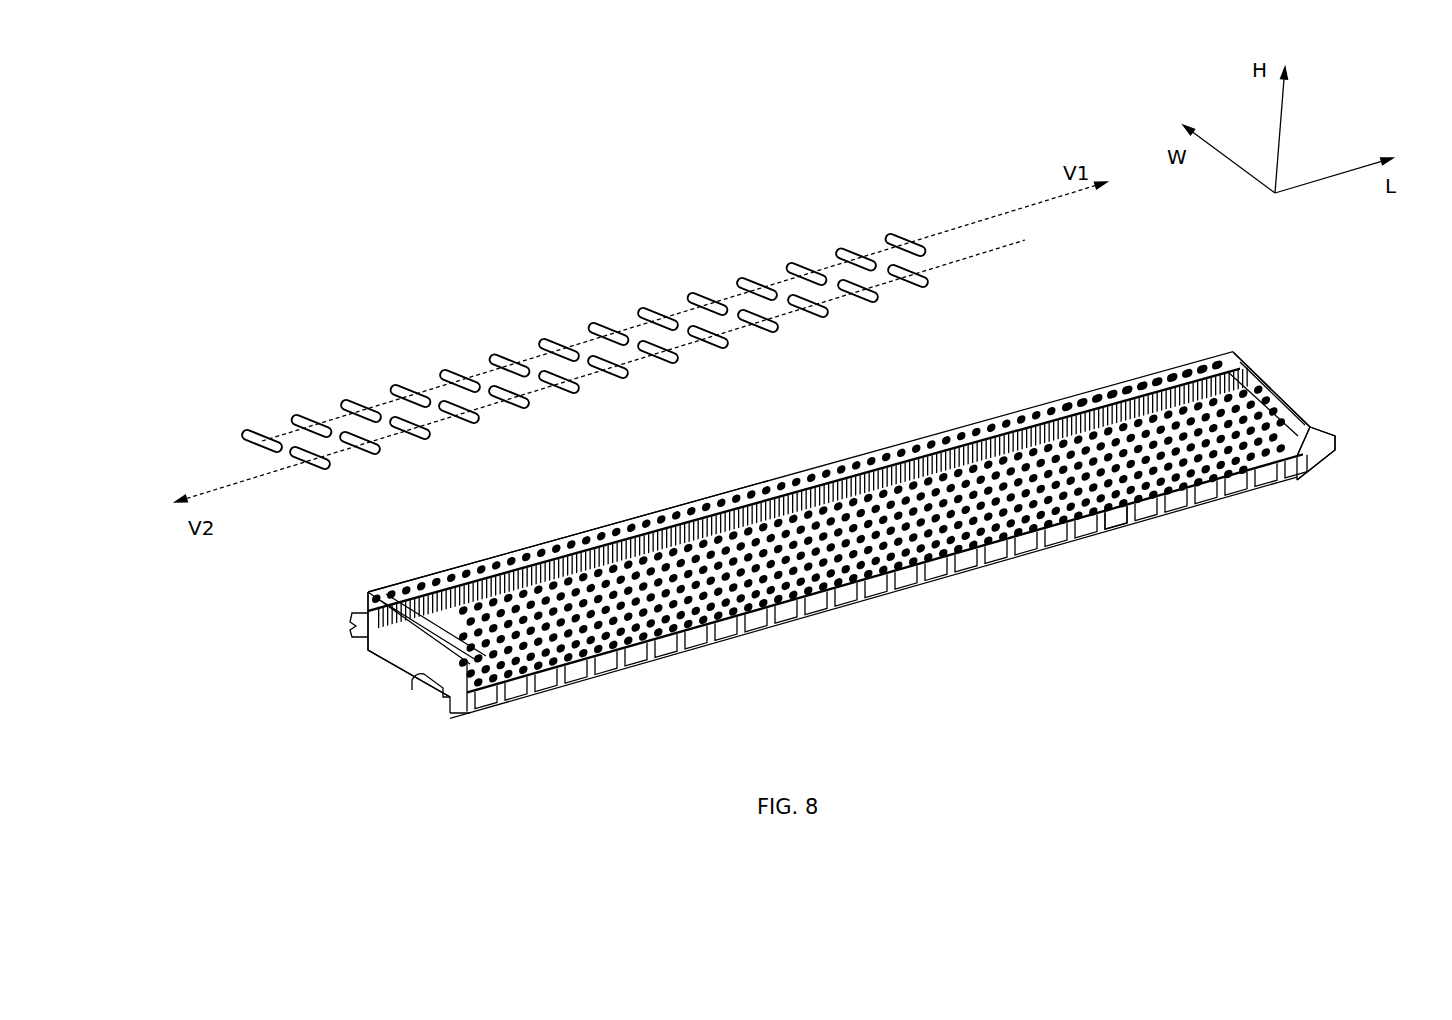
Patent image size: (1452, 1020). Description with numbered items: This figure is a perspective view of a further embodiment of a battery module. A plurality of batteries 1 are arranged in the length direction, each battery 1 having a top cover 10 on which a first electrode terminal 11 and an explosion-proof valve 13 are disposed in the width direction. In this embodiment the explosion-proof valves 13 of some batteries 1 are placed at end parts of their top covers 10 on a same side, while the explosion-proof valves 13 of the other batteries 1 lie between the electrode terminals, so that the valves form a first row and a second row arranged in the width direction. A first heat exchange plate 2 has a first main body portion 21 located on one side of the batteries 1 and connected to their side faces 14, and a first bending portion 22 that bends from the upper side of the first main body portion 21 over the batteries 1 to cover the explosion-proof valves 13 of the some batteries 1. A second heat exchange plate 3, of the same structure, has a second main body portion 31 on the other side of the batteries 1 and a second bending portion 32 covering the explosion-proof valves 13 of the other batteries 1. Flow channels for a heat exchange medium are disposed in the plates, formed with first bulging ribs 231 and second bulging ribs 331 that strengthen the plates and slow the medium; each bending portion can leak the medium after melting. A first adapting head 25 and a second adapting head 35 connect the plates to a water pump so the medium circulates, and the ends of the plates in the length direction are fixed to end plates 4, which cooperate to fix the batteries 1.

The battery 1 is at (1235, 373).
The first heat exchange plate 2 is at (1006, 388).
The second heat exchange plate 3 is at (1347, 464).
The end plate 4 is at (1253, 383).
The top cover 10 is at (1112, 402).
The first electrode terminal 11 is at (1122, 398).
The explosion-proof valve 13 is at (892, 237).
The side face 14 is at (1255, 478).
The first main body portion 21 is at (365, 600).
The first bending portion 22 is at (845, 457).
The first adapting head 25 is at (380, 650).
The second main body portion 31 is at (1178, 497).
The second bending portion 32 is at (1110, 523).
The second adapting head 35 is at (410, 690).
The first bulging ribs 231 is at (780, 477).
The second bulging ribs 331 is at (1083, 543).